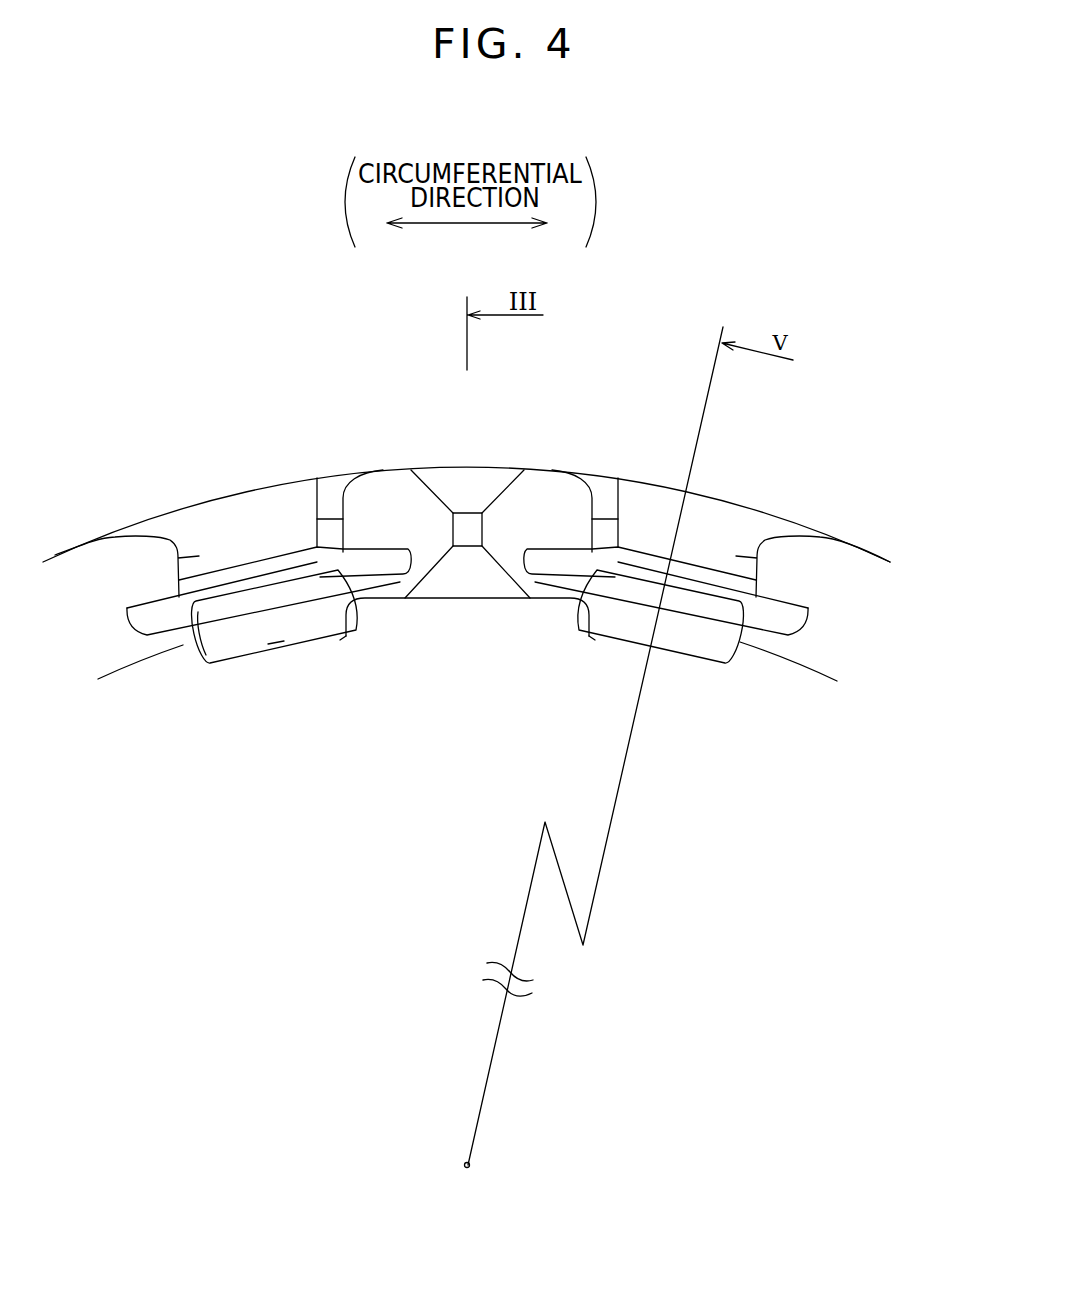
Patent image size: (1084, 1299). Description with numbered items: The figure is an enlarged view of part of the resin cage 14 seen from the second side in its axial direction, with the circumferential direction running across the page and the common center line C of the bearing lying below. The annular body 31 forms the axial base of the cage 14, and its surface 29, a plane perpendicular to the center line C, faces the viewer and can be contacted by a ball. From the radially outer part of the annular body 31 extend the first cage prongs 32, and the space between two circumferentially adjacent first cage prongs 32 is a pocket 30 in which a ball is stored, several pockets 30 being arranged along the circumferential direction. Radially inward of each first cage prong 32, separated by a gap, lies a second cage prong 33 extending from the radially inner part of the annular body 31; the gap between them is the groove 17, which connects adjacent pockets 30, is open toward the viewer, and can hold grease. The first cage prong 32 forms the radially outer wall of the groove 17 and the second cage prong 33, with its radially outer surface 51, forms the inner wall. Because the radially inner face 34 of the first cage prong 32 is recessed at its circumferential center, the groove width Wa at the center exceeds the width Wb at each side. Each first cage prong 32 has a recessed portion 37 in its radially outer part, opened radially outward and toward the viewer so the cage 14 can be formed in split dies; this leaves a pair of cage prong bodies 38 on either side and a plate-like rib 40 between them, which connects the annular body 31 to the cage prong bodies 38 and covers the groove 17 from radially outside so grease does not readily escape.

The cage 14 is at (828, 510).
The groove 17 is at (654, 559).
The surface 29 is at (467, 527).
The pocket 30 is at (867, 611).
The annular body 31 is at (468, 600).
The first cage prong 32 is at (621, 465).
The second cage prong 33 is at (687, 643).
The radially inner face 34 is at (580, 617).
The recessed portion 37 is at (644, 483).
The cage prong body 38 is at (768, 517).
The rib 40 is at (631, 590).
The radially outer surface 51 is at (277, 645).
The groove width at center Wa is at (713, 564).
The groove width at sides Wb is at (735, 647).
The center line C is at (475, 1165).